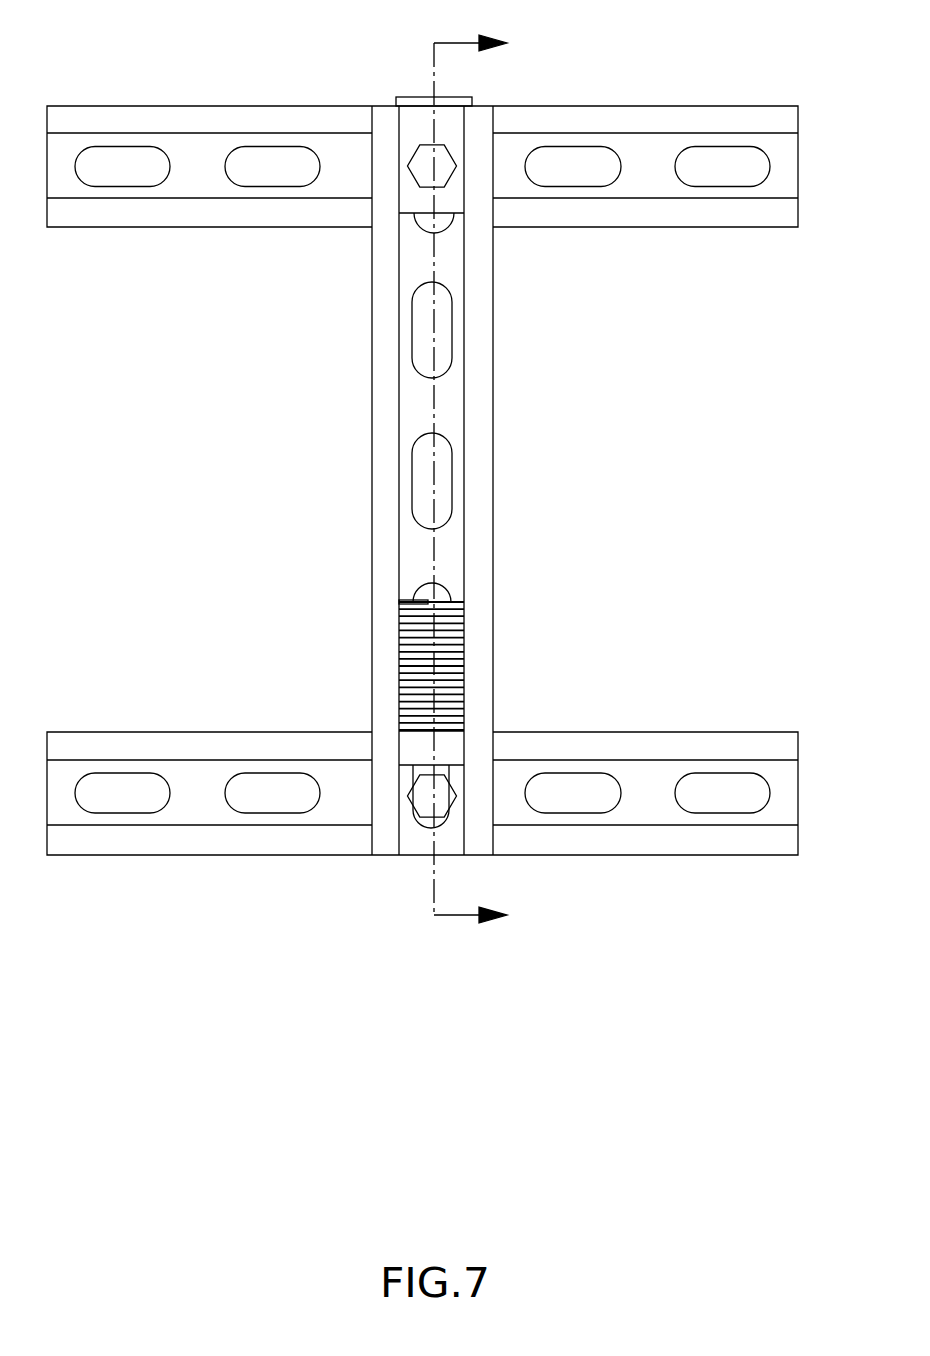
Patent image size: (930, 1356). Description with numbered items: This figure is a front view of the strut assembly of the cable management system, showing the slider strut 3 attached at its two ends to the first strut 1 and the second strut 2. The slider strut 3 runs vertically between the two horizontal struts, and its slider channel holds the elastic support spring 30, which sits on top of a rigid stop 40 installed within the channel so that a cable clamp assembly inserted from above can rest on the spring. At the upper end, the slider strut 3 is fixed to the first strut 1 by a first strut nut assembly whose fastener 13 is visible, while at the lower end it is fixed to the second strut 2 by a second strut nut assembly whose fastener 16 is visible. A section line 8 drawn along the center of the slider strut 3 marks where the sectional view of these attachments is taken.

The first strut 1 is at (96, 120).
The second strut 2 is at (143, 742).
The slider strut 3 is at (387, 445).
The section line 8- 8 is at (470, 485).
The fastener 13 is at (424, 163).
The fastener 16 is at (427, 798).
The support spring 30 is at (452, 628).
The rigid stop 40 is at (453, 752).